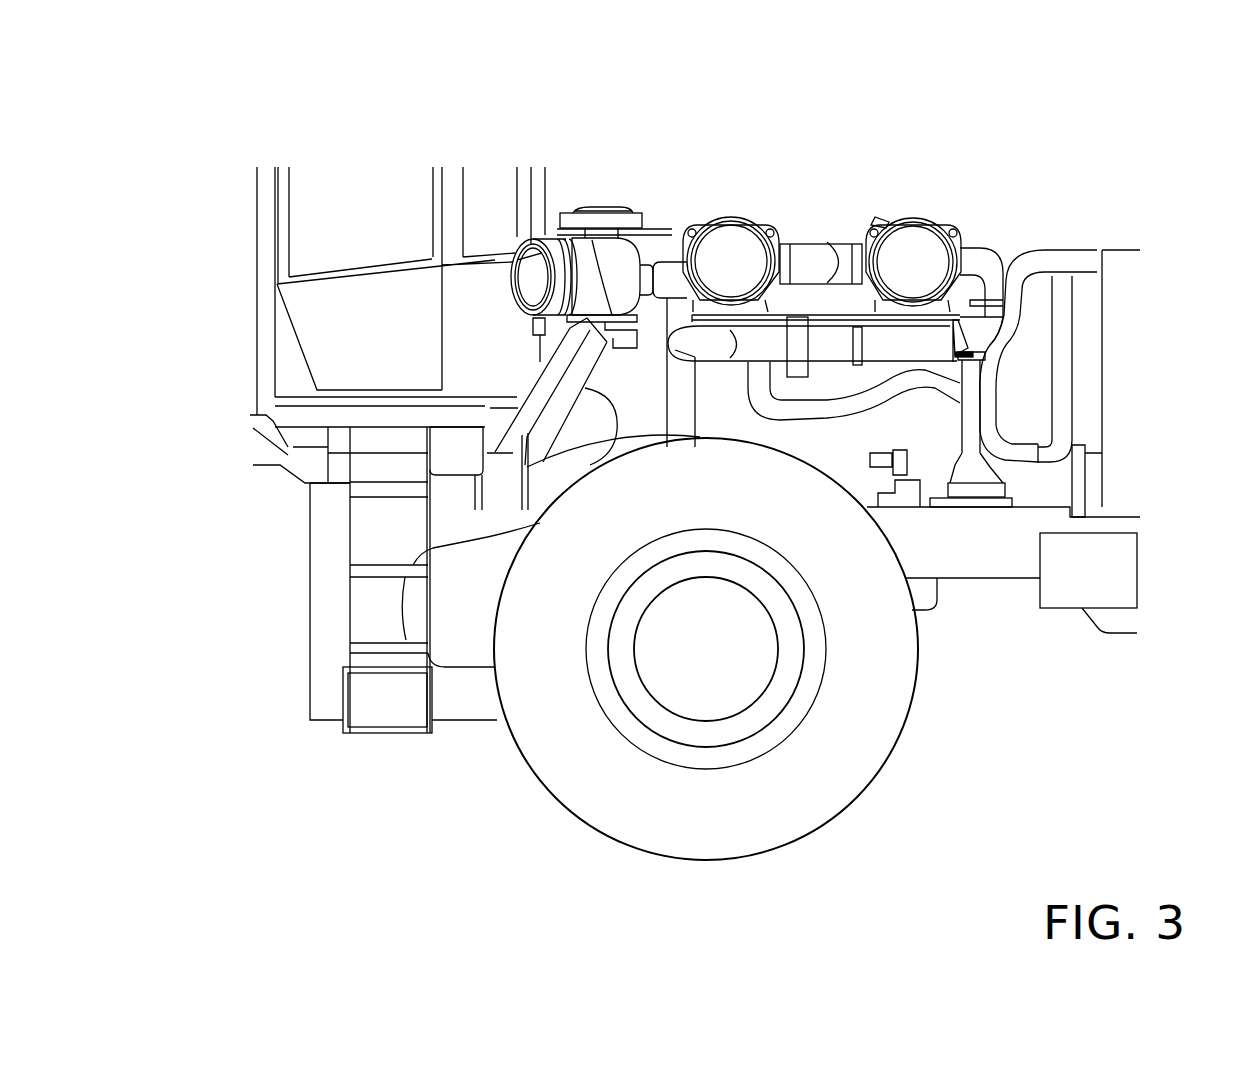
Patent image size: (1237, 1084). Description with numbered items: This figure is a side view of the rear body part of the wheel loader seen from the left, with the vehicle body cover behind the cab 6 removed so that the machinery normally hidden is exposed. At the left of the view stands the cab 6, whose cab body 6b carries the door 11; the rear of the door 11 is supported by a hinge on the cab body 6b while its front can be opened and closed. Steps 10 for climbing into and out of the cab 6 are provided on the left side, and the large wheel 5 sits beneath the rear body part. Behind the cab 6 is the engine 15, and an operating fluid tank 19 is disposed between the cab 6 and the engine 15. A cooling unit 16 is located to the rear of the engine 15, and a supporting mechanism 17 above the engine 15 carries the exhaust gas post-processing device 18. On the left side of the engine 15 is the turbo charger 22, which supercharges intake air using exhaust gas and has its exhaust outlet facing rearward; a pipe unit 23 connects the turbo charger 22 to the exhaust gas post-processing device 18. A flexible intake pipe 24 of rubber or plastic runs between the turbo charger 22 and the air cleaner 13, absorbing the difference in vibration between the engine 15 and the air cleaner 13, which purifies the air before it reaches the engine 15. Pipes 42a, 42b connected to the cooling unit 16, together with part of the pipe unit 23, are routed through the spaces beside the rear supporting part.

The front wheel 5 is at (570, 770).
The cab 6 is at (416, 160).
The cab body 6b is at (487, 333).
The steps 10 is at (350, 540).
The door 11 is at (325, 210).
The air cleaner 13 is at (601, 200).
The engine 15 is at (870, 373).
The cooling unit 16 is at (1145, 240).
The supporting mechanism 17 is at (1000, 400).
The exhaust gas post-processing device 18 is at (890, 208).
The operating fluid tank 19 is at (655, 218).
The turbo charger 22 is at (801, 325).
The pipe unit 23 is at (988, 245).
The intake pipe 24 is at (672, 300).
The pipe 42a is at (1087, 265).
The pipe 42b is at (1030, 250).